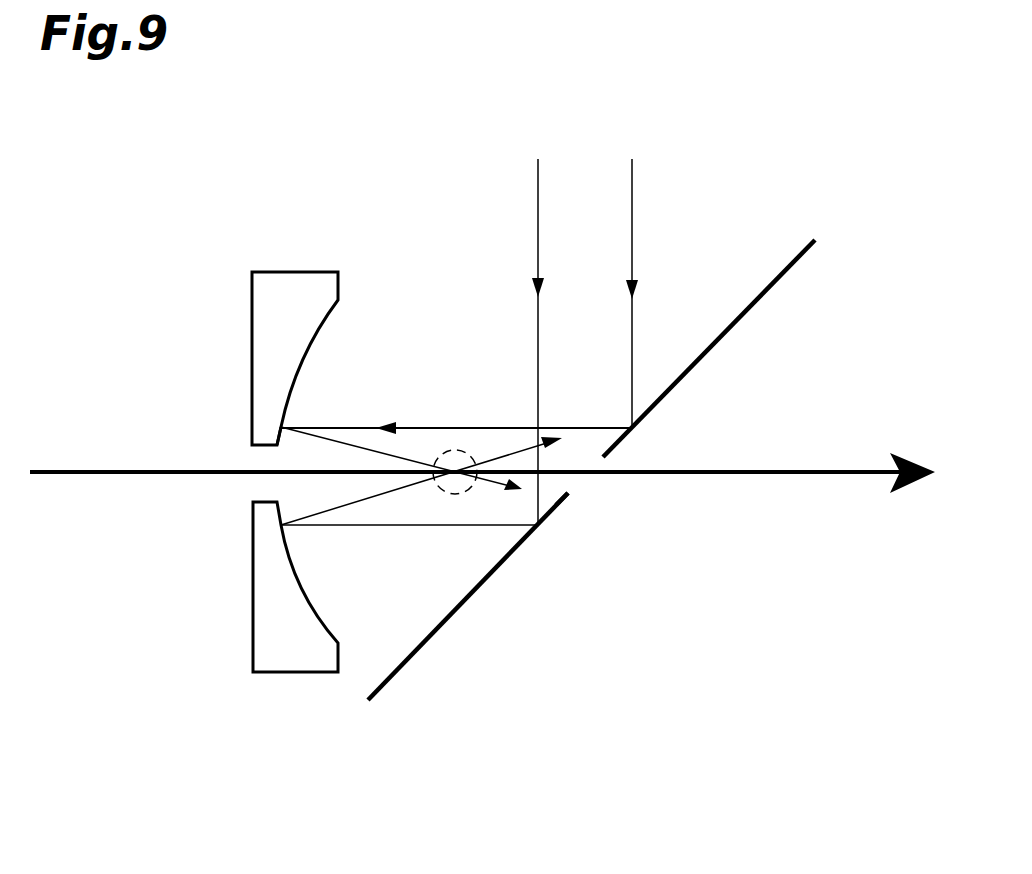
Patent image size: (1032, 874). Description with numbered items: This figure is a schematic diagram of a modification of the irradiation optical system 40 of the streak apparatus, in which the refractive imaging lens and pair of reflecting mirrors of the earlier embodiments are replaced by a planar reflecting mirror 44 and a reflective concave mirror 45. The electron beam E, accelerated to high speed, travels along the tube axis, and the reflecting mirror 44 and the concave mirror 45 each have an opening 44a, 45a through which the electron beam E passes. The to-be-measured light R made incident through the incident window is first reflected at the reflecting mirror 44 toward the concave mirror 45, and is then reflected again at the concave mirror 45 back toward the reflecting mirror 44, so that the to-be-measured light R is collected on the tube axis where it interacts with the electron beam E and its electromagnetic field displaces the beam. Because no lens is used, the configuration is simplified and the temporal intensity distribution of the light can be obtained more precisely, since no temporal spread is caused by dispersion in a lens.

The irradiation optical system 40 is at (425, 816).
The planar reflecting mirror 44 is at (748, 310).
The opening 44a is at (572, 493).
The reflective concave mirror 45 is at (289, 286).
The opening 45a is at (257, 447).
The to-be-measured light R is at (536, 213).
The electron beam E is at (722, 474).